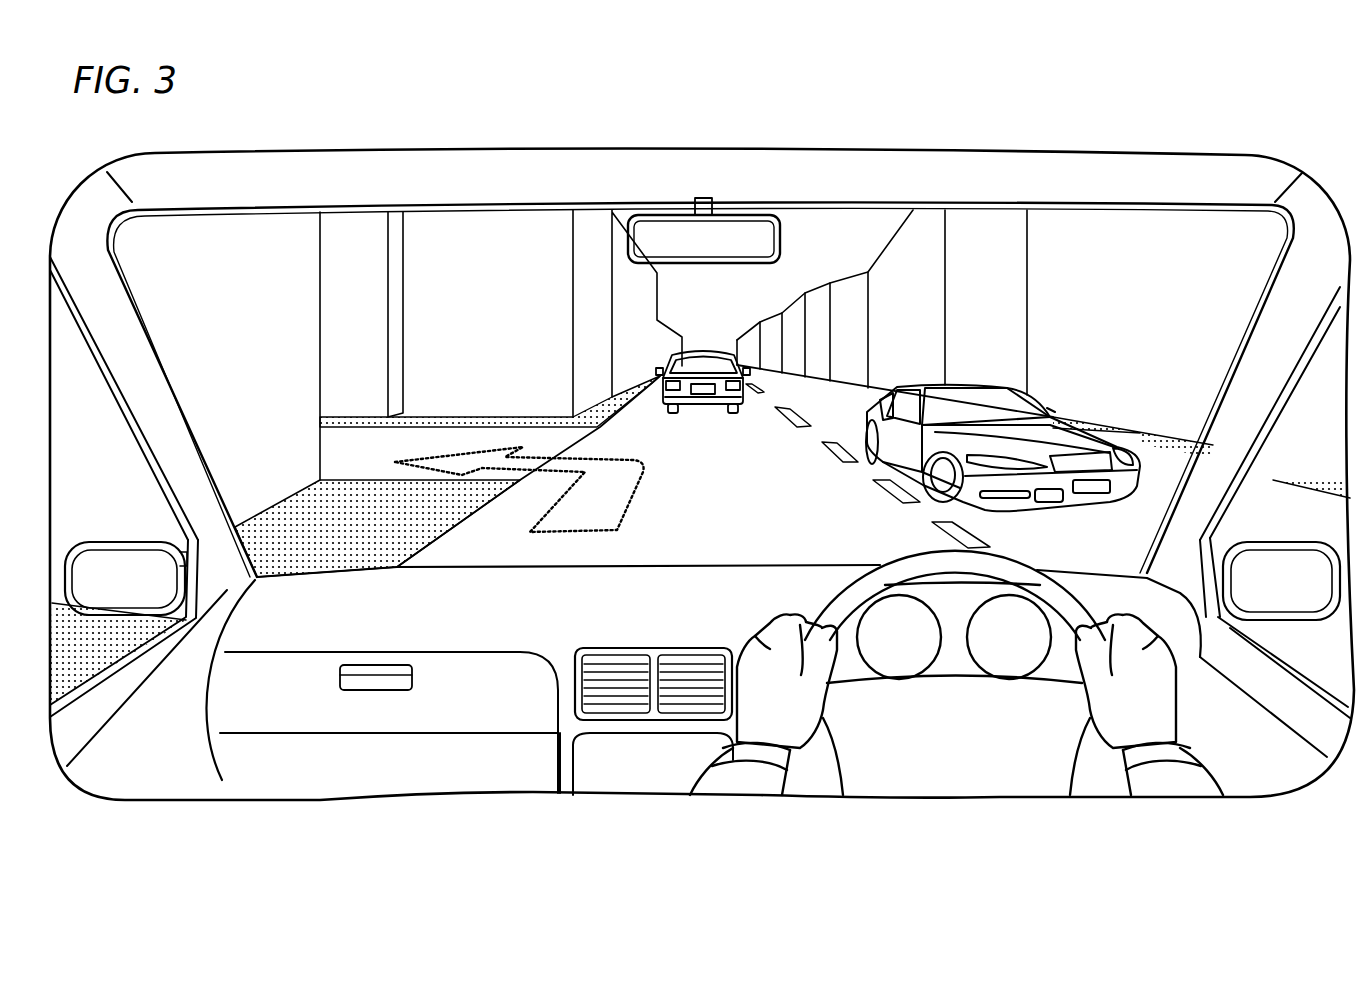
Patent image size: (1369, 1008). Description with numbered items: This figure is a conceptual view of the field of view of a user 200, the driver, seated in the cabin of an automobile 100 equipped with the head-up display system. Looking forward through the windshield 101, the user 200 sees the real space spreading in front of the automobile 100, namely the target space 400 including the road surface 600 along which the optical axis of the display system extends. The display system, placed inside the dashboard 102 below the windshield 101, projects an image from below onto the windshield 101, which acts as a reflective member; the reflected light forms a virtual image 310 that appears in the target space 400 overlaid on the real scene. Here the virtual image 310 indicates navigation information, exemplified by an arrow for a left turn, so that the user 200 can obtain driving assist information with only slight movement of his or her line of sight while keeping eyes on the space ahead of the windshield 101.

The automobile 100 is at (315, 792).
The windshield 101 is at (287, 238).
The dashboard 102 is at (745, 587).
The user 200 is at (1207, 781).
The virtual image 310 is at (636, 492).
The target space 400 is at (790, 479).
The road surface 600 is at (468, 540).